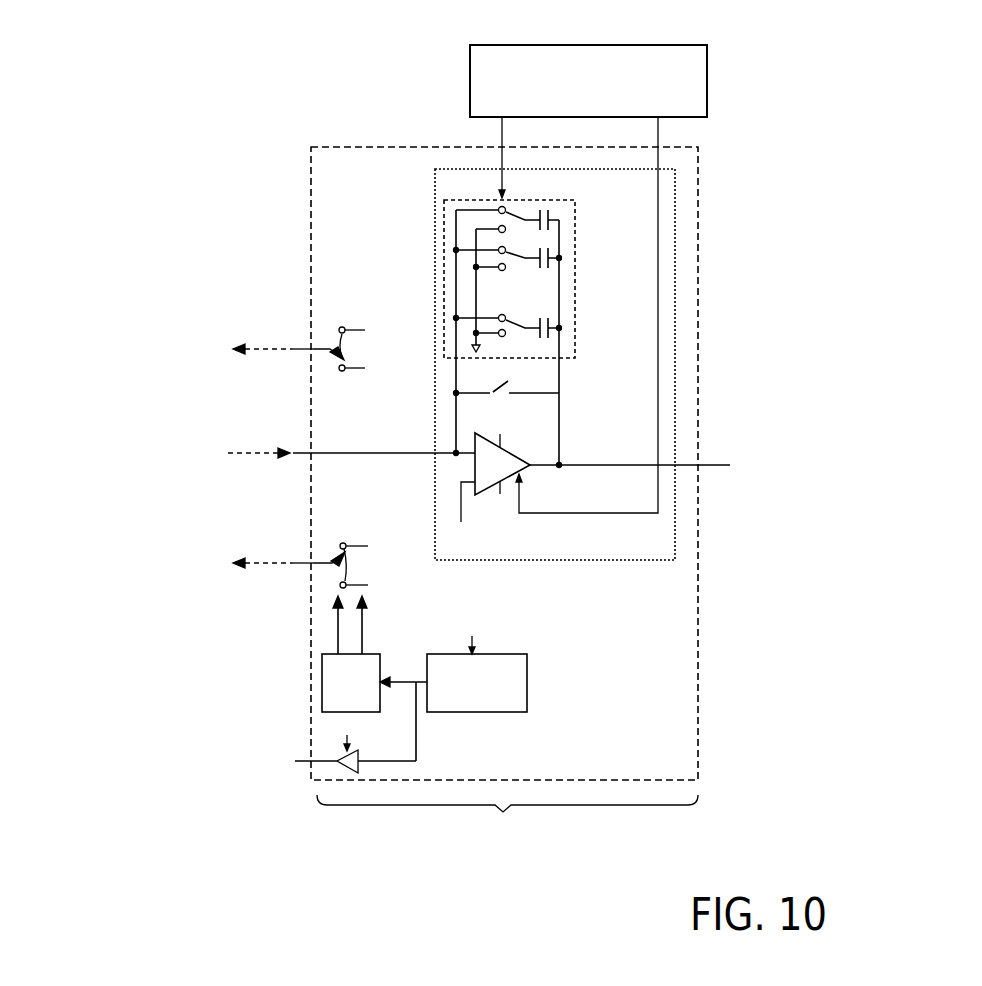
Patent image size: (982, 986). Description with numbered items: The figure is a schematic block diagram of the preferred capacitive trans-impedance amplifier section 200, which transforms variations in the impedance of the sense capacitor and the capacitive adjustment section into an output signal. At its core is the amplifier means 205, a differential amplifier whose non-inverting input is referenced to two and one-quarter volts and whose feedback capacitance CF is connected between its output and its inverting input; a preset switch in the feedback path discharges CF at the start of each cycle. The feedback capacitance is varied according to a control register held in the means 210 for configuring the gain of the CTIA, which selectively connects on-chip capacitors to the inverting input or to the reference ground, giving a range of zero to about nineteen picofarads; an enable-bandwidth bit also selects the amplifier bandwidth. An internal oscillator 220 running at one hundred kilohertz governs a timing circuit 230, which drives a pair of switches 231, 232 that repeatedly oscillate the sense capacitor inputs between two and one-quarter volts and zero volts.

The means for configuring the gain of the CTIA 210 is at (594, 45).
The capacitive trans-impedance amplifier section 200 is at (430, 502).
The amplifier means 205 is at (636, 562).
The switch 231 is at (328, 366).
The switch 232 is at (333, 552).
The timing circuit 230 is at (368, 654).
The internal oscillator 220 is at (528, 690).